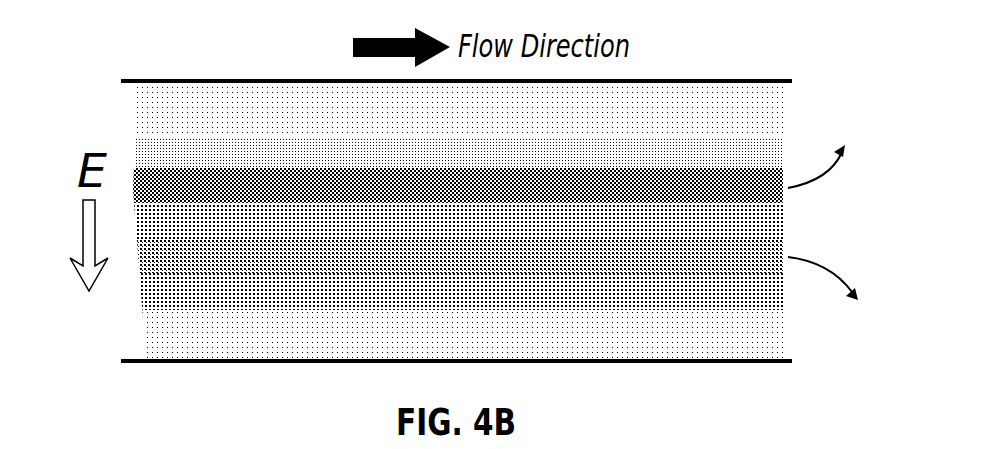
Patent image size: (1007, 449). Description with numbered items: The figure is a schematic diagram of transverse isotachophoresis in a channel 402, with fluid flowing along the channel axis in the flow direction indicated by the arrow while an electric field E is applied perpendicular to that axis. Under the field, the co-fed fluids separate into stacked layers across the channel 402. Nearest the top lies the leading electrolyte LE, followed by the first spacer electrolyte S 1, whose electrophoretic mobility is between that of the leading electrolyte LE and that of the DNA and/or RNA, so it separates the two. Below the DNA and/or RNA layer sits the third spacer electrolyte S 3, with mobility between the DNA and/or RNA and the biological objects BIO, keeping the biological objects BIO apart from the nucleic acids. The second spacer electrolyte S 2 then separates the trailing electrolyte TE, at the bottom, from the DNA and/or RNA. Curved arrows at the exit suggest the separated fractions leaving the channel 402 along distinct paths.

The channel 402 is at (291, 80).
The leading electrolyte LE is at (460, 110).
The trailing electrolyte TE is at (460, 334).
The biological objects BIO is at (460, 256).
The first spacer electrolyte S1 1 is at (460, 153).
The second spacer electrolyte S2 2 is at (460, 293).
The third spacer electrolyte S3 3 is at (460, 222).